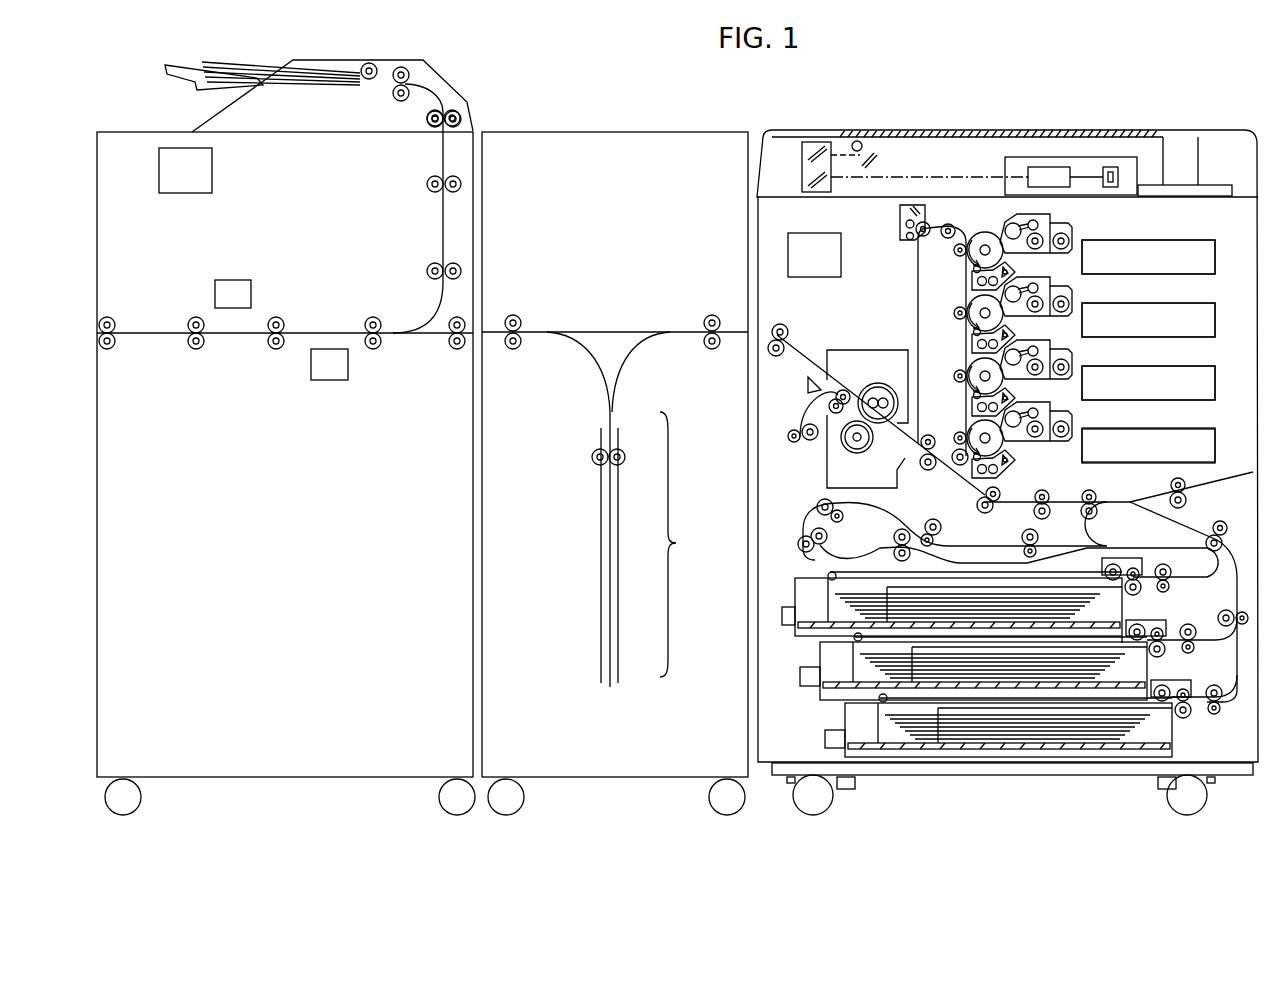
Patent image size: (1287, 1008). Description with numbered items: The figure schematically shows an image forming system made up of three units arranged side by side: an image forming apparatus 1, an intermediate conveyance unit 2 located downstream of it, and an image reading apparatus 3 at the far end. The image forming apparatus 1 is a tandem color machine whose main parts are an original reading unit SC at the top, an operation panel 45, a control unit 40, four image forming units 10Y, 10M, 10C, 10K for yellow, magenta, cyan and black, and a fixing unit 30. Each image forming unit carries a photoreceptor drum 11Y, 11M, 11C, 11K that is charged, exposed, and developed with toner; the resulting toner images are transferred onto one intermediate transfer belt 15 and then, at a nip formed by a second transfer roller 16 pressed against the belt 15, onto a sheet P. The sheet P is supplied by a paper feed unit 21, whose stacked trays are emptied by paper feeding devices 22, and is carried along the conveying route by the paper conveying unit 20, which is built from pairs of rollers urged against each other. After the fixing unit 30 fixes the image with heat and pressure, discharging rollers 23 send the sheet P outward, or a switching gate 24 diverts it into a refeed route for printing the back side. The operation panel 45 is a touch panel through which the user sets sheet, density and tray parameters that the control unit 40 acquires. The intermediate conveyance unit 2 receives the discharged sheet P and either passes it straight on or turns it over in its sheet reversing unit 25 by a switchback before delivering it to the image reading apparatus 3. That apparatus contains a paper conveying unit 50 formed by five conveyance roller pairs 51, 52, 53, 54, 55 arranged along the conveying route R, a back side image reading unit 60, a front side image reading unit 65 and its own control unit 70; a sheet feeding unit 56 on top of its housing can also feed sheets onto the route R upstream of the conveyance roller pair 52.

The image forming apparatus 1 is at (1224, 124).
The intermediate conveyance unit 2 is at (652, 126).
The image reading apparatus 3 is at (257, 52).
The original reading unit SC is at (978, 166).
The operation panel 45 is at (1168, 185).
The control unit 40 is at (841, 244).
The intermediate transfer belt 15 is at (916, 280).
The photoreceptor drum 11Y is at (976, 234).
The photoreceptor drum 11M is at (974, 300).
The photoreceptor drum 11C is at (972, 363).
The photoreceptor drum 11K is at (972, 426).
The image forming unit 10Y is at (1078, 236).
The image forming unit 10M is at (1078, 299).
The image forming unit 10C is at (1078, 362).
The image forming unit 10K is at (1078, 425).
The second transfer roller 16 is at (928, 470).
The fixing unit 30 is at (906, 300).
The discharging rollers 23 is at (790, 326).
The switching gate 24 is at (813, 378).
The paper conveying unit 20 is at (820, 568).
The paper feed unit 21 is at (797, 622).
The paper feeding device 22 is at (1142, 567).
The sheet P is at (1062, 588).
The sheet reversing unit 25 is at (687, 544).
The paper conveying unit 50 is at (305, 290).
The conveyance roller pair 51 is at (452, 350).
The conveyance roller pair 52 is at (366, 350).
The conveyance roller pair 53 is at (260, 350).
The conveyance roller pair 54 is at (180, 350).
The conveyance roller pair 55 is at (113, 320).
The sheet feeding unit 56 is at (455, 90).
The back side image reading unit 60 is at (320, 381).
The front side image reading unit 65 is at (241, 280).
The control unit 70 is at (213, 168).
The conveying route R is at (352, 330).